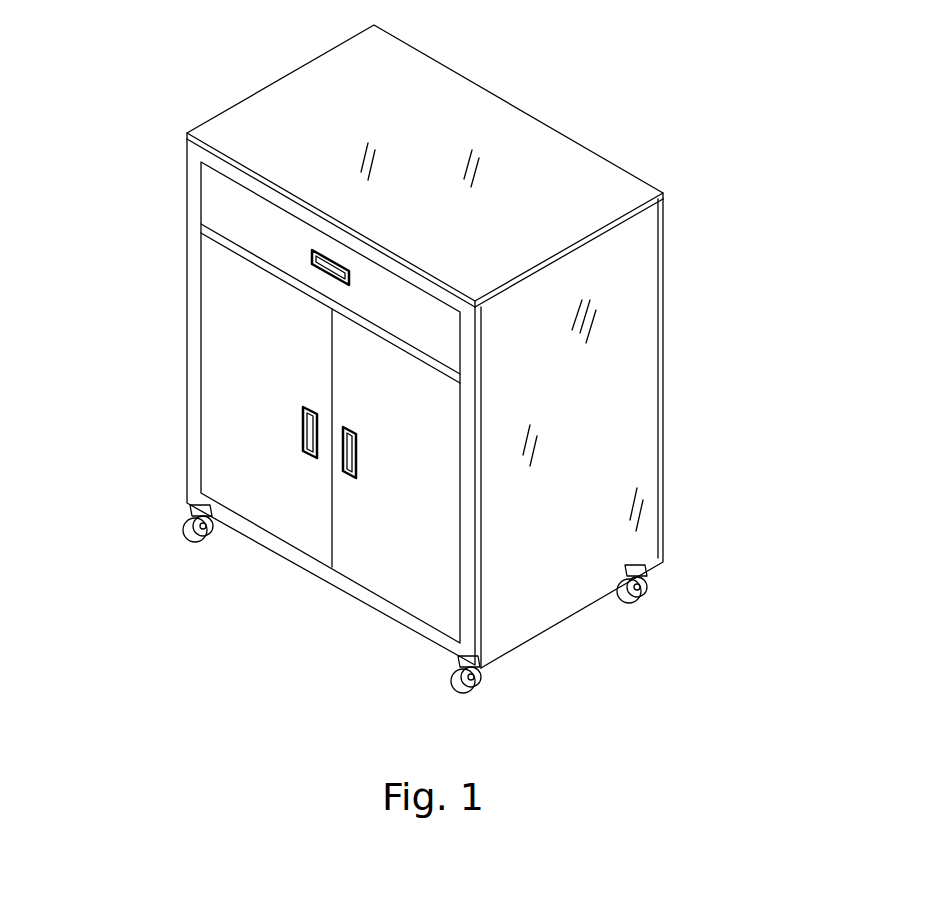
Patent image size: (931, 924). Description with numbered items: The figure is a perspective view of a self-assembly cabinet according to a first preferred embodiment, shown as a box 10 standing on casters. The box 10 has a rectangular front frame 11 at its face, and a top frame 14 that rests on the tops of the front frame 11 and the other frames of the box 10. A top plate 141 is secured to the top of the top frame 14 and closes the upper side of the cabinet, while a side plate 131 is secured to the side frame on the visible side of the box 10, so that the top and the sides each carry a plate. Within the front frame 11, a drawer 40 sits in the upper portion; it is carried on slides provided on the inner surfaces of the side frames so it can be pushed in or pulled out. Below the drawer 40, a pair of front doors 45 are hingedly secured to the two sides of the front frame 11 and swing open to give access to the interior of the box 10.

The box 10 is at (435, 359).
The front frame 11 is at (196, 328).
The top frame 14 is at (375, 166).
The top plate 141 is at (538, 162).
The side plate 131 is at (615, 422).
The drawer 40 is at (228, 203).
The front door 45 is at (220, 452).